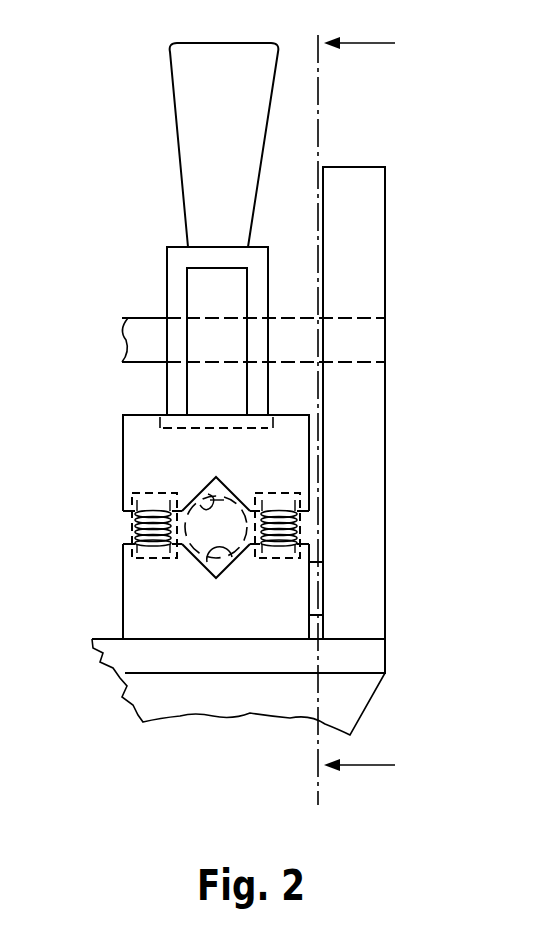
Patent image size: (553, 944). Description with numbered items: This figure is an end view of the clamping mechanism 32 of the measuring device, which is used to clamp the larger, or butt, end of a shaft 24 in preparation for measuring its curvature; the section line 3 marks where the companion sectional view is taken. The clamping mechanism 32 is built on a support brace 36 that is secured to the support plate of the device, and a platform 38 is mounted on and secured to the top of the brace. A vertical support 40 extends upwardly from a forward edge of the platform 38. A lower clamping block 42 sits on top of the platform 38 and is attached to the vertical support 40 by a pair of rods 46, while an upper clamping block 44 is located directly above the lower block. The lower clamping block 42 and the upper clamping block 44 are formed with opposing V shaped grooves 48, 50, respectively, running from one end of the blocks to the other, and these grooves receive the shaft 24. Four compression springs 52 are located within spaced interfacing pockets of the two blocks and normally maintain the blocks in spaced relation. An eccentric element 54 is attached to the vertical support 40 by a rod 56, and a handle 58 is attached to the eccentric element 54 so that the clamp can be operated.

The section line 3- 3 is at (367, 416).
The shaft 24 is at (242, 485).
The clamping mechanism 32 is at (392, 258).
The support brace 36 is at (162, 703).
The platform 38 is at (362, 657).
The vertical support 40 is at (360, 484).
The lower clamping block 42 is at (137, 602).
The upper clamping block 44 is at (140, 460).
The rods 46 is at (320, 598).
The V shaped groove 48 is at (207, 565).
The V shaped groove 50 is at (200, 505).
The compression springs 52 is at (133, 530).
The eccentric element 54 is at (172, 268).
The rod 56 is at (130, 332).
The handle 58 is at (175, 52).